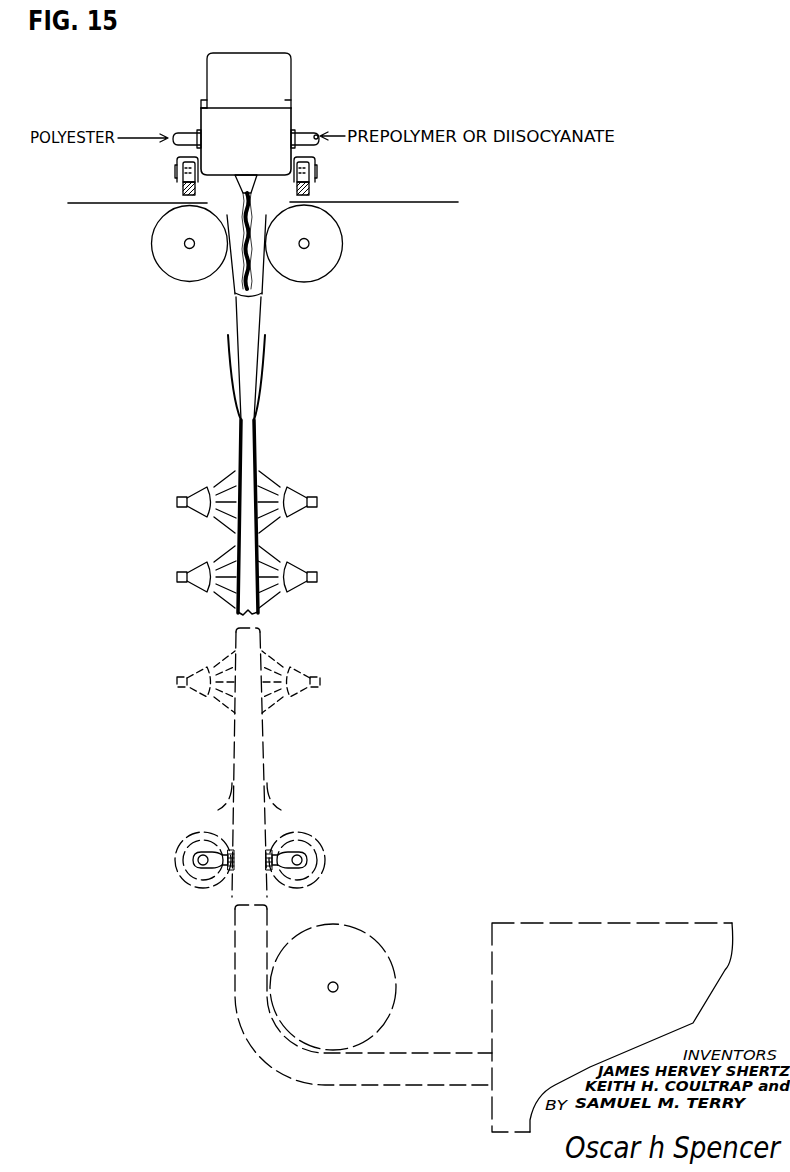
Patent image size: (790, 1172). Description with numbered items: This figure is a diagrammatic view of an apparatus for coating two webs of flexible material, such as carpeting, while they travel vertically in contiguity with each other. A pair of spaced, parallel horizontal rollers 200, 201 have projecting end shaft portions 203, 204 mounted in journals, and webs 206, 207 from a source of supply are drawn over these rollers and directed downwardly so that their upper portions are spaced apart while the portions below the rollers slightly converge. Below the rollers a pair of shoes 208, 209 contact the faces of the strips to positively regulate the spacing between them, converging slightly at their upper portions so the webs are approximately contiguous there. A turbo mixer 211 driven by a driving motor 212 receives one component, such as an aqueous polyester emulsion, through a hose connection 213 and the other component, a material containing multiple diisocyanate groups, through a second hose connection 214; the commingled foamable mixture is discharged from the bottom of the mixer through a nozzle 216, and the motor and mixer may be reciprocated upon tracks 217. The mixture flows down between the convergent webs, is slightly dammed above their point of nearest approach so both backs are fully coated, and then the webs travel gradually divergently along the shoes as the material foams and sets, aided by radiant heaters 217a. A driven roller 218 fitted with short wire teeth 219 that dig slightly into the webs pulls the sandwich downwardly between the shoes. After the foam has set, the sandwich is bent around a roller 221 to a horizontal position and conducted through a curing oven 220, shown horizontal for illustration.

The roller 200 is at (183, 281).
The roller 201 is at (333, 269).
The end shaft portion 203 is at (184, 243).
The end shaft portion 204 is at (309, 243).
The web of flexible material 206 is at (86, 203).
The web of flexible material 207 is at (440, 202).
The shoe 208 is at (240, 440).
The shoe 209 is at (254, 436).
The turbo mixer 211 is at (246, 137).
The driving motor 212 is at (246, 58).
The hose connection 213 is at (181, 130).
The second hose connection 214 is at (304, 131).
The nozzle 216 is at (242, 183).
The tracks 217 is at (180, 192).
The radiant heaters 217a is at (309, 571).
The roller 218 is at (284, 856).
The wire teeth 219 is at (263, 863).
The curing oven 220 is at (524, 923).
The roller 221 is at (378, 940).